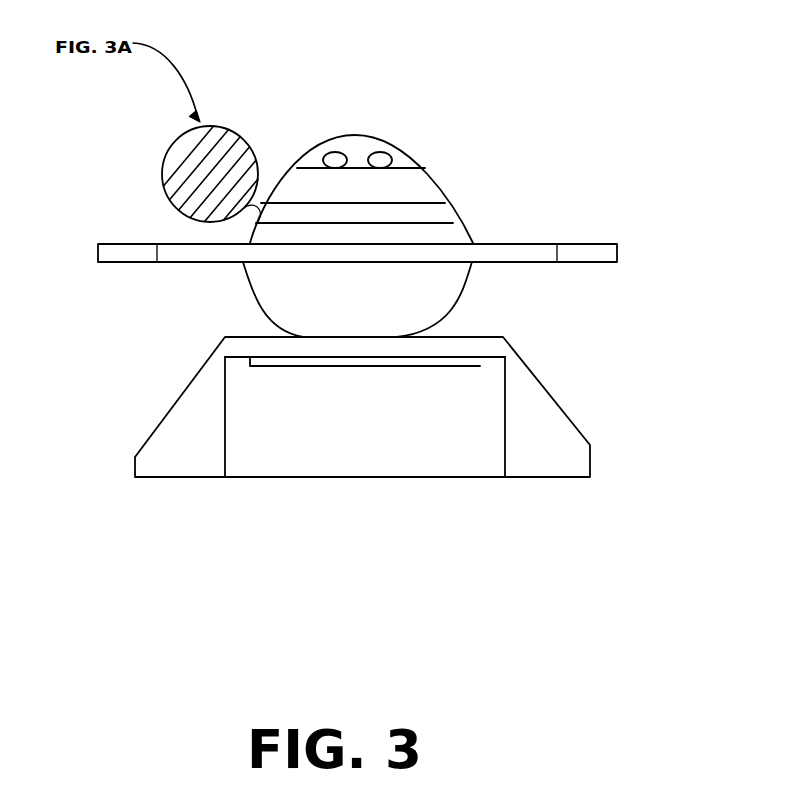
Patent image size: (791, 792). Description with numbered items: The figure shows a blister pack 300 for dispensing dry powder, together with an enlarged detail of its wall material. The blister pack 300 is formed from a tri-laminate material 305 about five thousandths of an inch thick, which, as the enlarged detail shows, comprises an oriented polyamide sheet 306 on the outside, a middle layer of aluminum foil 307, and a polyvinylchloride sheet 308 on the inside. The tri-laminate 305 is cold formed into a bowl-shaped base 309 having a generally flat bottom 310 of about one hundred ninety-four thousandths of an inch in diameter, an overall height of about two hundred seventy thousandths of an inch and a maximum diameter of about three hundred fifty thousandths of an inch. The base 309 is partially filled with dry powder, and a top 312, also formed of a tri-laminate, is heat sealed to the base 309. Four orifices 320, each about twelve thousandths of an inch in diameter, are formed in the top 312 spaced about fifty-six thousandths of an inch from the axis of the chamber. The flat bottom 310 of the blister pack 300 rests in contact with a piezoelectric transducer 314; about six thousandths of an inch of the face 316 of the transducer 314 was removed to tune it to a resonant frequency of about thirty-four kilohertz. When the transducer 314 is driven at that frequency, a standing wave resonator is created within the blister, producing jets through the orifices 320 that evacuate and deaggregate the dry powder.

In FIG. 3, the blister pack 300 is at (494, 125).
In FIG. 3, the tri-laminate material 305 is at (250, 128).
In FIG. 3A, the oriented polyamide sheet 306 is at (204, 143).
In FIG. 3A, the middle layer of aluminum foil 307 is at (192, 173).
In FIG. 3A, the polyvinylchloride sheet 308 is at (204, 208).
In FIG. 3, the bowl-shaped base 309 is at (466, 290).
In FIG. 3, the flat bottom 310 is at (287, 325).
In FIG. 3, the top 312 is at (456, 206).
In FIG. 3, the piezoelectric transducer 314 is at (400, 484).
In FIG. 3, the face of the transducer 316 is at (471, 357).
In FIG. 3, the orifices 320 is at (371, 145).